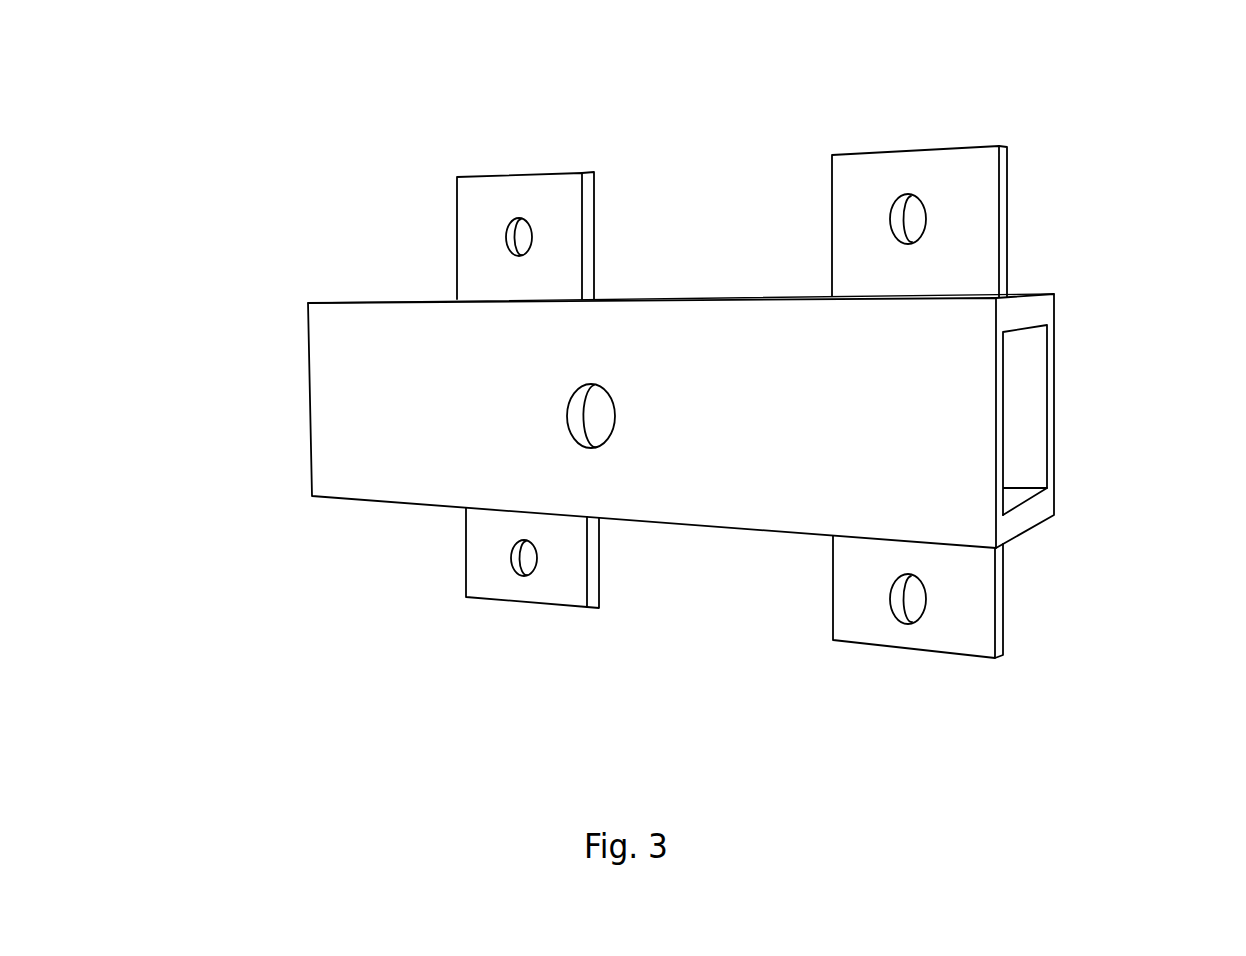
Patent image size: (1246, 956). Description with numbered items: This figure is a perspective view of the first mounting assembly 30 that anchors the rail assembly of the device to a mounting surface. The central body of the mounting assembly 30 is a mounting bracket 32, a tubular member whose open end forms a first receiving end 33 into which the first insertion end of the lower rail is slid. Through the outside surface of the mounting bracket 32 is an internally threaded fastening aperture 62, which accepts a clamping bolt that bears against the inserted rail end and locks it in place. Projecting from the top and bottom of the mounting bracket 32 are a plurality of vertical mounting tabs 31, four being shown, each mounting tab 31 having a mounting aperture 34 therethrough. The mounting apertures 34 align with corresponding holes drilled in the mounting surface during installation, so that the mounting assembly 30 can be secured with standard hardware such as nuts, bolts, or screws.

The mounting assembly 30 is at (283, 625).
The mounting tab 31 is at (458, 213).
The mounting bracket 32 is at (308, 452).
The first receiving end 33 is at (1033, 409).
The mounting aperture 34 is at (517, 235).
The fastening aperture 62 is at (597, 415).